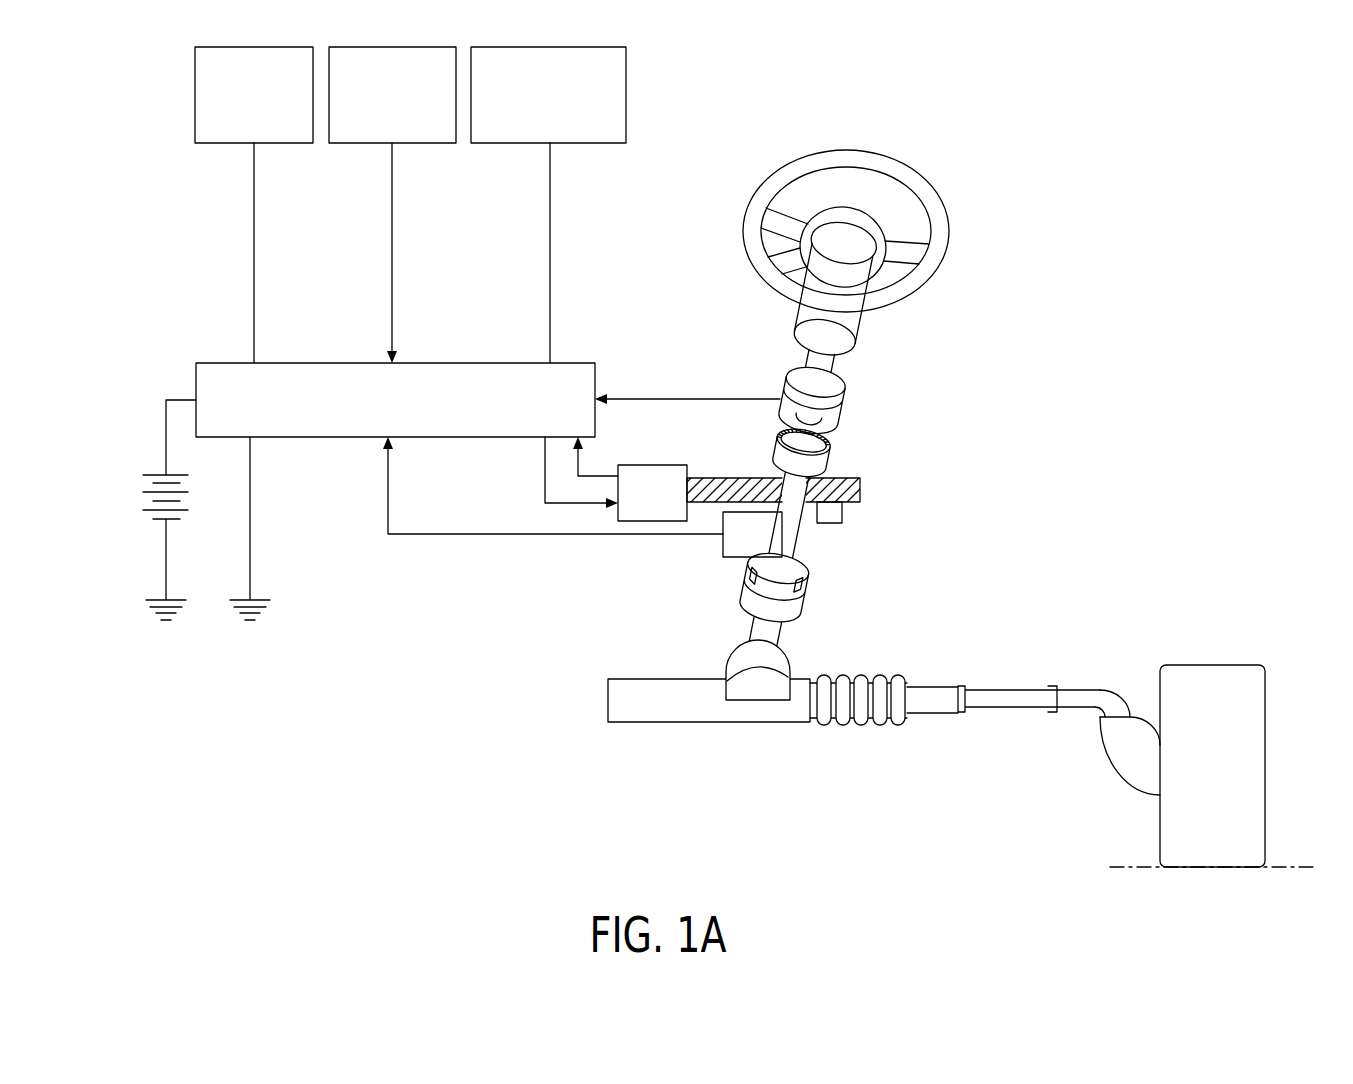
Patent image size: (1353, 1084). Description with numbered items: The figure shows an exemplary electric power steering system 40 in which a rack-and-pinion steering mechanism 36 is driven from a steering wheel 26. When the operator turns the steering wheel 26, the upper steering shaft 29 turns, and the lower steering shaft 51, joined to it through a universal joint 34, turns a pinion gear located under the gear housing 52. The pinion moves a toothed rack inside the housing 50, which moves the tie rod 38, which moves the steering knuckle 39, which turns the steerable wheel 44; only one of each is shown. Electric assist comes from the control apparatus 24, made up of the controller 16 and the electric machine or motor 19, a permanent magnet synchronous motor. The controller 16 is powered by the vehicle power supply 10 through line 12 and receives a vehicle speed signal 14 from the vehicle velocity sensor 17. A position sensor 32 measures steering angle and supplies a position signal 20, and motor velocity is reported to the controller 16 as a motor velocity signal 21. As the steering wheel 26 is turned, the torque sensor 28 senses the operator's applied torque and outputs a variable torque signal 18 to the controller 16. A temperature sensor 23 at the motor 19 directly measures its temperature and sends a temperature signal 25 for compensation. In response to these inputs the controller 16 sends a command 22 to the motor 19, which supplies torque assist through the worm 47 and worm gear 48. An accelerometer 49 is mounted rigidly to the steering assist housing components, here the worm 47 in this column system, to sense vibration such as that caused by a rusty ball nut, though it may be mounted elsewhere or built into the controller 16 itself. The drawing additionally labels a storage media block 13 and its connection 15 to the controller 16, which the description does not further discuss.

The vehicle power supply 10 is at (143, 492).
The line 12 is at (182, 398).
The storage media 13 is at (218, 145).
The vehicle speed signal 14 is at (392, 273).
The storage media connection line 15 is at (254, 277).
The controller 16 is at (337, 439).
The vehicle velocity sensor 17 is at (341, 145).
The torque signal 18 is at (704, 396).
The motor 19 is at (666, 465).
The position signal 20 is at (612, 540).
The motor velocity signal 21 is at (575, 463).
The command 22 is at (560, 520).
The temperature sensor 23 is at (497, 145).
The control apparatus 24 is at (1045, 373).
The temperature signal 25 is at (550, 270).
The steering wheel 26 is at (900, 178).
The torque sensor 28 is at (838, 393).
The upper steering shaft 29 is at (830, 350).
The position sensor 32 is at (722, 553).
The universal joint 34 is at (797, 585).
The steering mechanism 36 is at (893, 666).
The tie rod 38 is at (1002, 700).
The steering knuckle 39 is at (1128, 753).
The electric power steering system 40 is at (1128, 474).
The steerable wheel 44 is at (1198, 683).
The worm 47 is at (858, 492).
The worm gear 48 is at (820, 453).
The accelerometer 49 is at (840, 512).
The housing 50 is at (648, 712).
The lower steering shaft 51 is at (778, 636).
The gear housing 52 is at (735, 662).